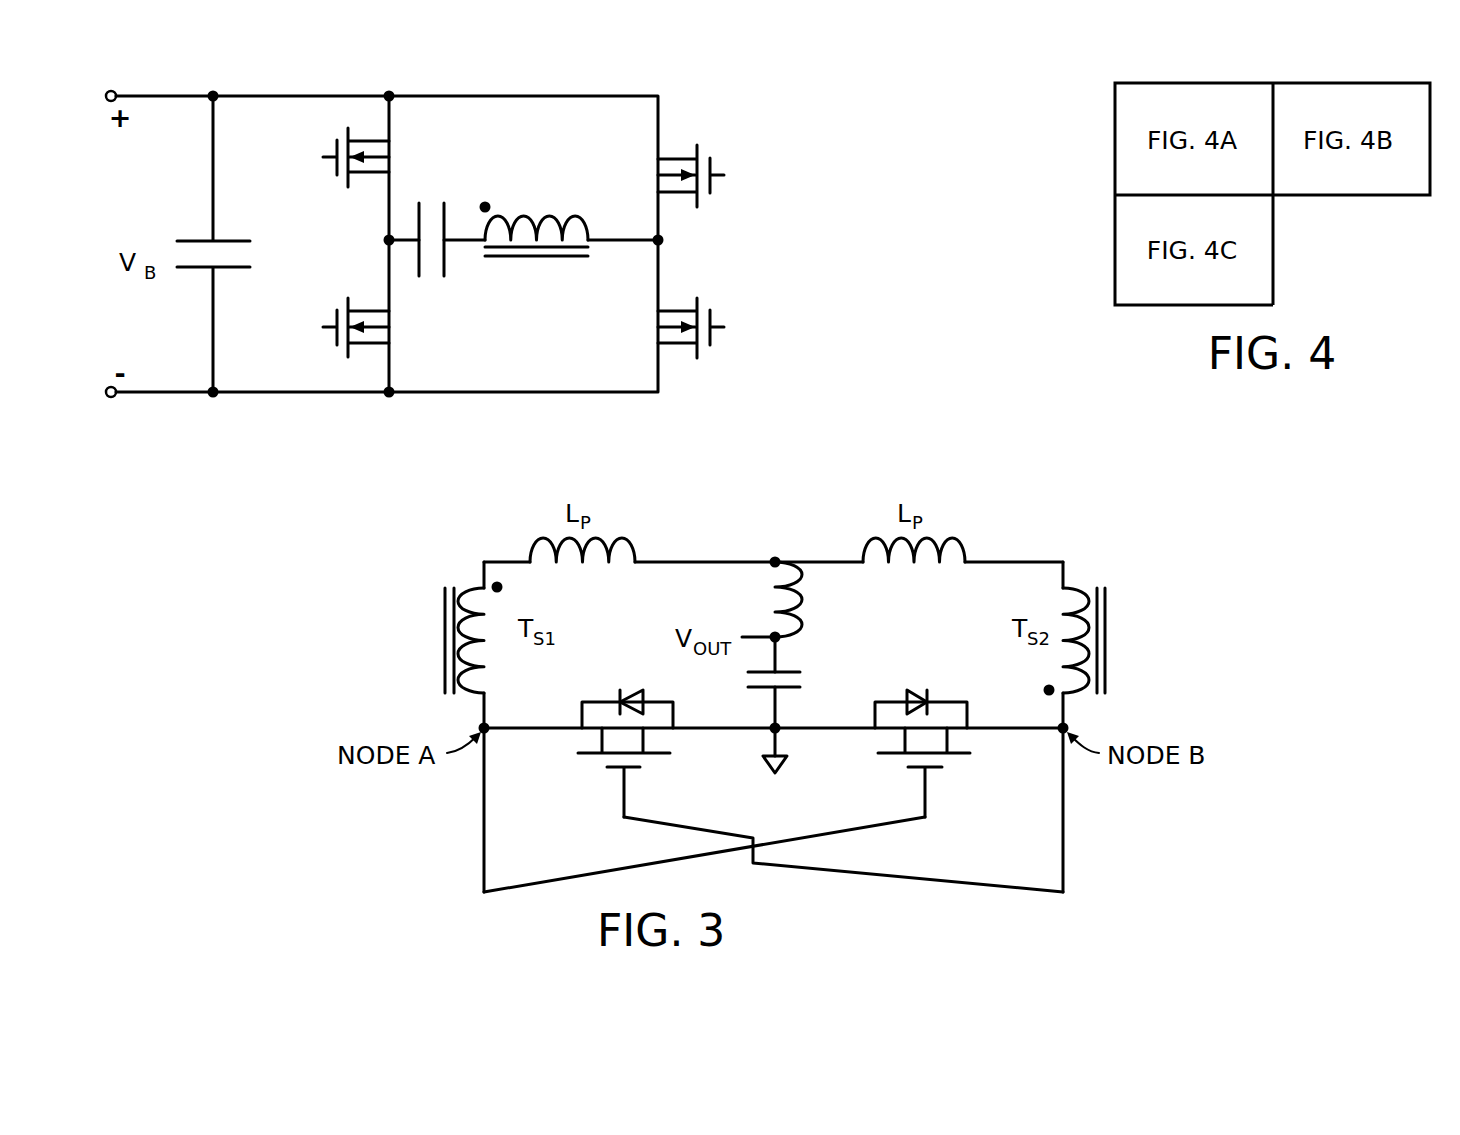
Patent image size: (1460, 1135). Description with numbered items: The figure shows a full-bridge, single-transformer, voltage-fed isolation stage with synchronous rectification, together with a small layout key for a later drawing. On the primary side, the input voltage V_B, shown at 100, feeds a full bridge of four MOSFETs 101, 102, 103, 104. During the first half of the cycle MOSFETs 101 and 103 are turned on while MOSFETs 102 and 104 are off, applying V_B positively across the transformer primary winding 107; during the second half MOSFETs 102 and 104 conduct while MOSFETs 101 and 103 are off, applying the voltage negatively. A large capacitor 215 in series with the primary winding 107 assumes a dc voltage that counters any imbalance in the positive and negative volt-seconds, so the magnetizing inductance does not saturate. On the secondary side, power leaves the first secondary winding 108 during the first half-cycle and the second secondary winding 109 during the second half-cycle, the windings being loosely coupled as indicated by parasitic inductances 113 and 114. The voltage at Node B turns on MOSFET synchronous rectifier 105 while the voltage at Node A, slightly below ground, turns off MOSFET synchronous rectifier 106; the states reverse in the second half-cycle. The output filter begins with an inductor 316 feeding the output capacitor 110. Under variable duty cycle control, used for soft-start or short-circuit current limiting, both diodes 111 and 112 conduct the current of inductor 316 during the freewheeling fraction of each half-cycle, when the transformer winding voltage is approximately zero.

The input voltage source / battery capacitor 100 is at (223, 269).
The MOSFET 101 is at (390, 158).
The MOSFET 102 is at (390, 338).
The MOSFET 103 is at (663, 328).
The MOSFET 104 is at (660, 183).
The primary winding 107 is at (552, 256).
The large capacitor 215 is at (444, 203).
The first secondary winding 108 is at (445, 602).
The second secondary winding 109 is at (1104, 603).
The parasitic inductance 113 is at (633, 547).
The parasitic inductance 114 is at (960, 547).
The inductor 316 is at (801, 612).
The capacitor 110 is at (796, 672).
The diode 111 is at (636, 692).
The diode 112 is at (912, 692).
The MOSFET synchronous rectifier 105 is at (670, 755).
The MOSFET synchronous rectifier 106 is at (970, 755).